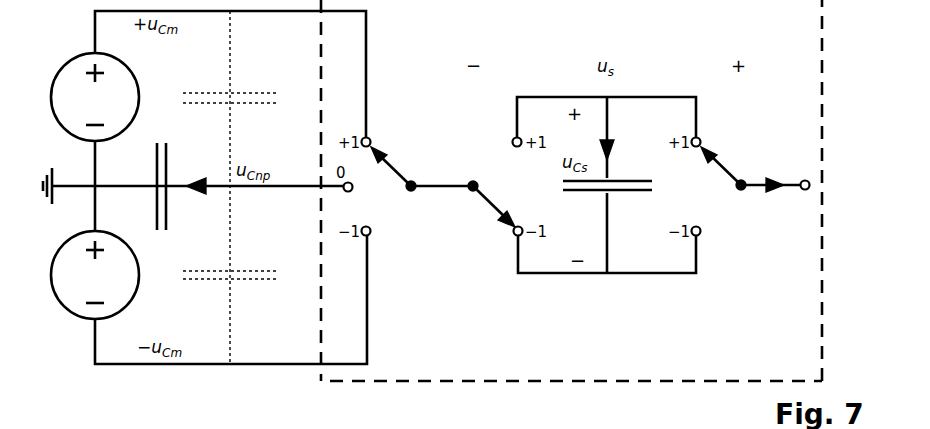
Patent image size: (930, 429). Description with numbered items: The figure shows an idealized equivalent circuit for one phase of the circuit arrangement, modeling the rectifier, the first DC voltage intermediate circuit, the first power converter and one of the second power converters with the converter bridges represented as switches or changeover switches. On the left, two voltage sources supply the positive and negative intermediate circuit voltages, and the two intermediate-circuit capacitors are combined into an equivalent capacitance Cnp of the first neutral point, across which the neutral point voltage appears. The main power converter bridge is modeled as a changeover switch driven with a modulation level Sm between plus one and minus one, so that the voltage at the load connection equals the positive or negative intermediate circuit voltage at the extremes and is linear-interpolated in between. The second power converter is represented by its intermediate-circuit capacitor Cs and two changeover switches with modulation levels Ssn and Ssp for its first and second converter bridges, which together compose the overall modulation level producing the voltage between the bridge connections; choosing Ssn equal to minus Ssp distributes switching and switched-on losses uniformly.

The equivalent capacitance of the first neutral point Cnp is at (159, 186).
The intermediate-circuit capacitor of the second power converter Cs is at (607, 180).
The modulation level of the main power converter bridge Sm is at (424, 161).
The modulation level of the first converter bridge Ssn is at (494, 215).
The modulation level of the second converter bridge Ssp is at (753, 161).